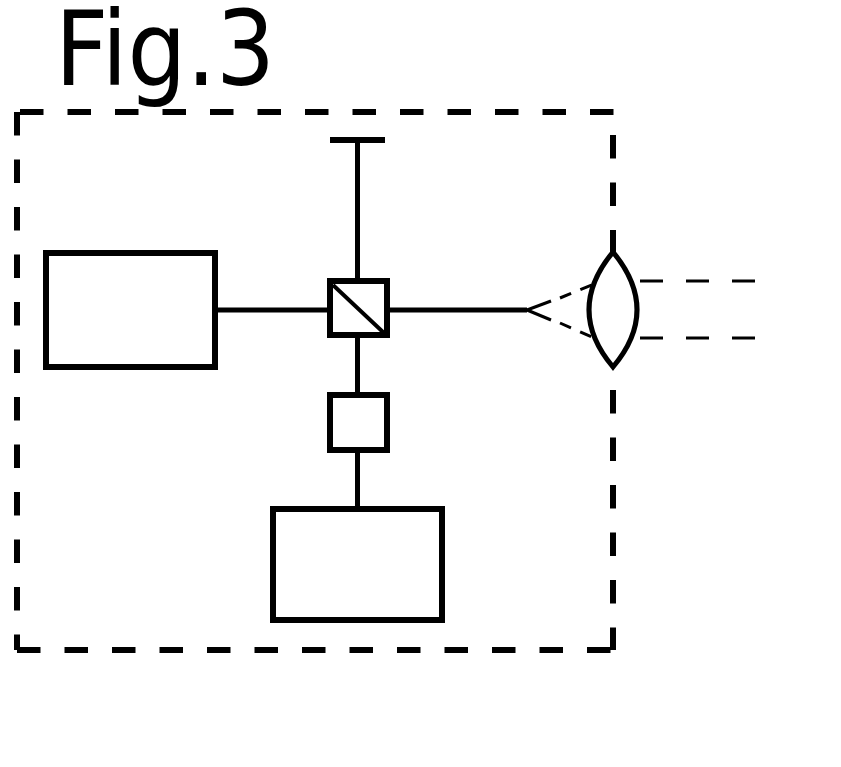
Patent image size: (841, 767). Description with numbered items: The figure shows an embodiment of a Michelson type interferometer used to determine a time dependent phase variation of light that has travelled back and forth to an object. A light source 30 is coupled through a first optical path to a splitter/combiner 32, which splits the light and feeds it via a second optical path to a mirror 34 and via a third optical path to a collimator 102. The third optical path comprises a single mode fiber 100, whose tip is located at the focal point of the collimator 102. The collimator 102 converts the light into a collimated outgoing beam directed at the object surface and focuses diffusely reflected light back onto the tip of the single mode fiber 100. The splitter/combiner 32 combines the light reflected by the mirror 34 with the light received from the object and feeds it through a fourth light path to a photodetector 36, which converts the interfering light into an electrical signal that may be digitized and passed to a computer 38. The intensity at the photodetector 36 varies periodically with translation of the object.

The light source 30 is at (105, 371).
The splitter/combiner 32 is at (371, 280).
The mirror 34 is at (370, 137).
The photodetector 36 is at (389, 419).
The computer 38 is at (446, 560).
The single mode fiber 100 is at (470, 308).
The collimator 102 is at (614, 250).